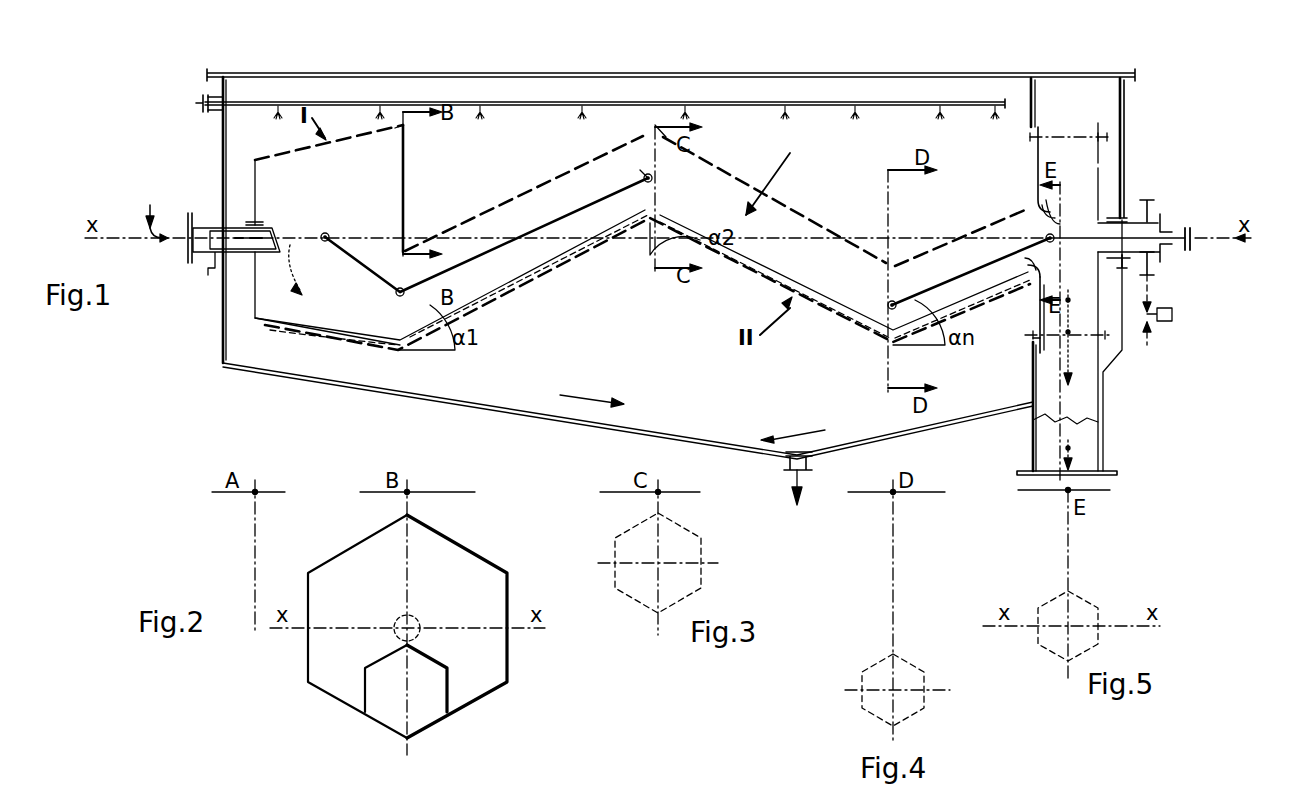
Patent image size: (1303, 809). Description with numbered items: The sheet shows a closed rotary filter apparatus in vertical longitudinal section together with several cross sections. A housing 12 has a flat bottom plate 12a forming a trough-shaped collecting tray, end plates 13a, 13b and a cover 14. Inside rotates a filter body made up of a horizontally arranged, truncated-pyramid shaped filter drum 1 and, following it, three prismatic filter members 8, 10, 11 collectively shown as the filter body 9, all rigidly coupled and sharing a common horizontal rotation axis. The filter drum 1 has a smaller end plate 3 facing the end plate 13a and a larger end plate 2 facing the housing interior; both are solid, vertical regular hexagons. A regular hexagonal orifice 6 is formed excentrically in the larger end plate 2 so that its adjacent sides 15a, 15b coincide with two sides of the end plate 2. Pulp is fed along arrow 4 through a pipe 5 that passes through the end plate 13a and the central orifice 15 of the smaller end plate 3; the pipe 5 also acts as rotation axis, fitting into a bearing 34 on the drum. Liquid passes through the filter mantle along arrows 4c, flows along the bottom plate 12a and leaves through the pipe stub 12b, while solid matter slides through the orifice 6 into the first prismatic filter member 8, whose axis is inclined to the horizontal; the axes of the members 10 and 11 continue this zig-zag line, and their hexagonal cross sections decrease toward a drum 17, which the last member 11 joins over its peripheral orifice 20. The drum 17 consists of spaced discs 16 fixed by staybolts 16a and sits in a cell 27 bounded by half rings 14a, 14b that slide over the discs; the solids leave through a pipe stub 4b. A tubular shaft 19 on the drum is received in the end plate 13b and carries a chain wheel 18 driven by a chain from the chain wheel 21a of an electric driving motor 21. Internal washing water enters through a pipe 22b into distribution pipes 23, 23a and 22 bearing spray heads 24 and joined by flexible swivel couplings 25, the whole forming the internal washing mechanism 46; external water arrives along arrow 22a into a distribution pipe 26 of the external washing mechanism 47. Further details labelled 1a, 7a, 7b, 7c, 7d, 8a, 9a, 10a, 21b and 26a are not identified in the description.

In FIG. 1, the filter drum 1 is at (405, 196).
In FIG. 1, the upper edge of partition wall 1a is at (405, 128).
In FIG. 1, the larger end plate 2 is at (408, 170).
In FIG. 2, the larger end plate 2 is at (495, 650).
In FIG. 1, the smaller end plate 3 is at (250, 178).
In FIG. 1, the arrow 4 is at (144, 220).
In FIG. 1, the pipe stub 4b is at (1100, 470).
In FIG. 1, the arrows 4c is at (280, 355).
In FIG. 1, the pipe 5 is at (188, 248).
In FIG. 1, the regular hexagonal orifice 6 is at (365, 342).
In FIG. 2, the regular hexagonal orifice 6 is at (432, 705).
In FIG. 1, the first duct section 7a is at (292, 148).
In FIG. 1, the second duct section 7b is at (462, 222).
In FIG. 1, the third duct section 7c is at (735, 172).
In FIG. 1, the fourth duct section 7d is at (950, 232).
In FIG. 1, the first prismatic filter member 8 is at (512, 208).
In FIG. 1, the panel edge 8a is at (556, 176).
In FIG. 1, the filter body 9 is at (650, 128).
In FIG. 1, the pivot bracket 9a is at (672, 152).
In FIG. 1, the prismatic filter member 10 is at (835, 252).
In FIG. 3, the prismatic filter member 10 is at (627, 597).
In FIG. 1, the lower pivot 10a is at (866, 256).
In FIG. 1, the prismatic filter member 11 is at (1053, 232).
In FIG. 4, the prismatic filter member 11 is at (925, 704).
In FIG. 1, the housing 12 is at (530, 372).
In FIG. 1, the bottom plate 12a is at (440, 399).
In FIG. 1, the pipe stub 12b is at (786, 454).
In FIG. 1, the end plate 13a is at (222, 358).
In FIG. 1, the end plate 13b is at (1124, 108).
In FIG. 1, the cover 14 is at (262, 73).
In FIG. 1, the half ring 14a is at (1034, 84).
In FIG. 1, the half ring 14b is at (1036, 368).
In FIG. 1, the central orifice 15 is at (245, 255).
In FIG. 2, the side of orifice 15a is at (385, 728).
In FIG. 2, the side of orifice 15b is at (420, 732).
In FIG. 1, the disc 16 is at (1033, 412).
In FIG. 1, the staybolt 16a is at (1030, 338).
In FIG. 1, the drum 17 is at (1068, 134).
In FIG. 1, the chain wheel 18 is at (1148, 200).
In FIG. 1, the tubular shaft 19 is at (1165, 216).
In FIG. 1, the orifice 20 is at (1032, 208).
In FIG. 1, the electric driving motor 21 is at (1168, 321).
In FIG. 1, the chain wheel 21a is at (1152, 342).
In FIG. 1, the actuator upper rod 21b is at (1175, 294).
In FIG. 1, the distribution pipe 22 is at (225, 115).
In FIG. 1, the arrow 22a is at (196, 103).
In FIG. 1, the pipe 22b is at (1226, 242).
In FIG. 1, the distribution pipe 23 is at (1185, 248).
In FIG. 1, the distribution pipe 23a is at (786, 232).
In FIG. 1, the spray head 24 is at (372, 272).
In FIG. 1, the flexible swivel coupling 25 is at (1077, 361).
In FIG. 1, the distribution pipe 26 is at (205, 96).
In FIG. 1, the spray pipe 26a is at (440, 100).
In FIG. 1, the cell 27 is at (1090, 95).
In FIG. 1, the bearing 34 is at (262, 222).
In FIG. 1, the internal washing mechanism 46 is at (774, 173).
In FIG. 1, the external washing mechanism 47 is at (752, 98).